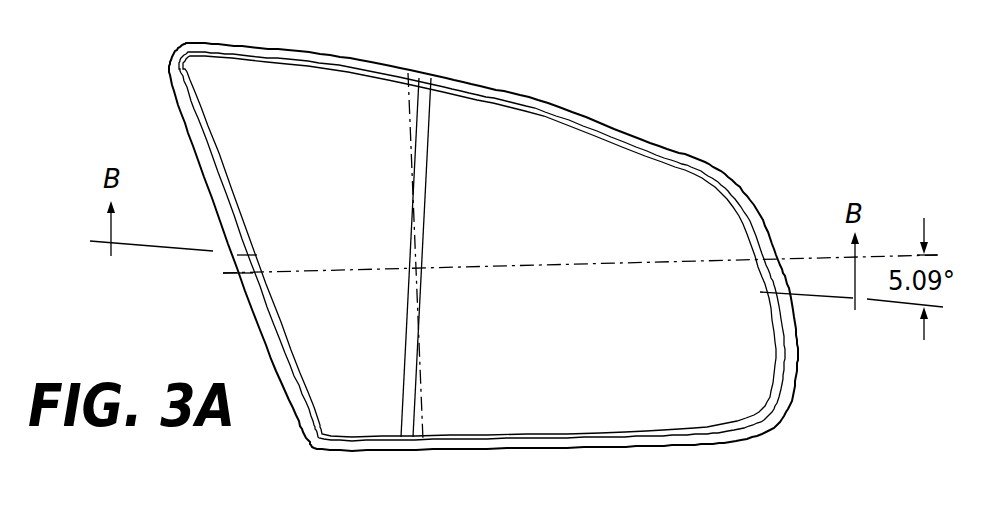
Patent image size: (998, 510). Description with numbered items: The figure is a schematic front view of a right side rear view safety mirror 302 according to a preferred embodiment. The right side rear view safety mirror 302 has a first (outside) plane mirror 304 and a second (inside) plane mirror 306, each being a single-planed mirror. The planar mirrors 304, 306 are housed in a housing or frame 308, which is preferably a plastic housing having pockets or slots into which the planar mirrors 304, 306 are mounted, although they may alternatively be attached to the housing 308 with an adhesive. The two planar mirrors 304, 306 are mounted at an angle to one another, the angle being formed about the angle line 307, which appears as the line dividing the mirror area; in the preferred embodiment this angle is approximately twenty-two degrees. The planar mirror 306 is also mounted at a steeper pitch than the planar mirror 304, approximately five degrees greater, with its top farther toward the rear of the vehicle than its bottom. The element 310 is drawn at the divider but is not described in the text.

The right side rear view safety mirror 302 is at (152, 79).
The first (outside) plane mirror 304 is at (595, 186).
The second (inside) plane mirror 306 is at (328, 148).
The angle line 307 is at (397, 222).
The housing 308 is at (556, 98).
The divider 310 is at (427, 292).